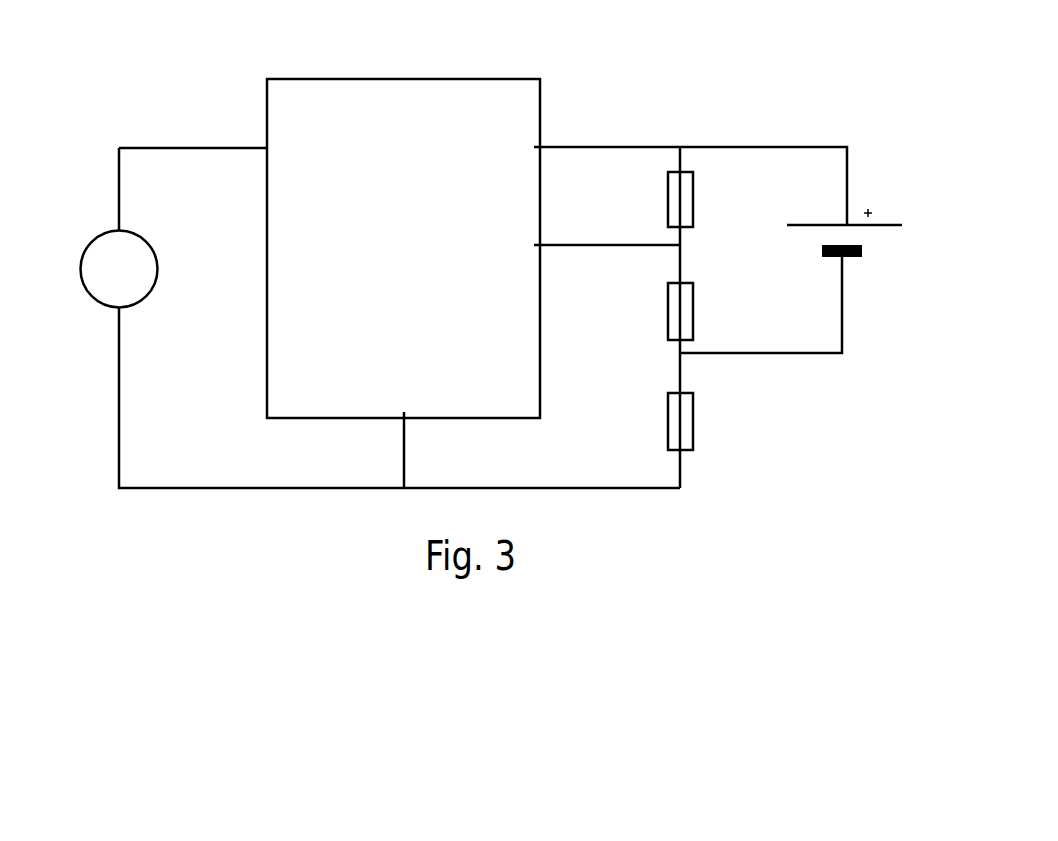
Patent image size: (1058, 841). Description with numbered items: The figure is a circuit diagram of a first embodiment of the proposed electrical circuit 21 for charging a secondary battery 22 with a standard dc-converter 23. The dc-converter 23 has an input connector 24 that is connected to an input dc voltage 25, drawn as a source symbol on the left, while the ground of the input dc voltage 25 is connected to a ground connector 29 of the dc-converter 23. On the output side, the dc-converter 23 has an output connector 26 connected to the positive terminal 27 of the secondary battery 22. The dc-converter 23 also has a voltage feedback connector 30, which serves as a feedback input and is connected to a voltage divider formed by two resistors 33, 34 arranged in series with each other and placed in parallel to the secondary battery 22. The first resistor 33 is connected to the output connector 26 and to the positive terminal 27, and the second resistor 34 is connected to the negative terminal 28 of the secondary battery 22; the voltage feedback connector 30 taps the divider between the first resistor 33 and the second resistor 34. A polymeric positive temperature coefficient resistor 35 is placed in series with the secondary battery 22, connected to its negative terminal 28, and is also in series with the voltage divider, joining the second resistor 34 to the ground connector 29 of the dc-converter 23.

The electrical circuit 21 is at (731, 77).
The secondary battery 22 is at (875, 261).
The dc-converter 23 is at (482, 90).
The input connector 24 is at (262, 152).
The input dc voltage 25 is at (95, 253).
The output connector 26 is at (540, 147).
The positive terminal 27 is at (842, 218).
The negative terminal 28 is at (843, 258).
The ground connector 29 is at (405, 422).
The voltage feedback connector 30 is at (540, 245).
The first resistor 33 is at (693, 202).
The second resistor 34 is at (693, 313).
The polymeric positive temperature coefficient resistor 35 is at (693, 418).